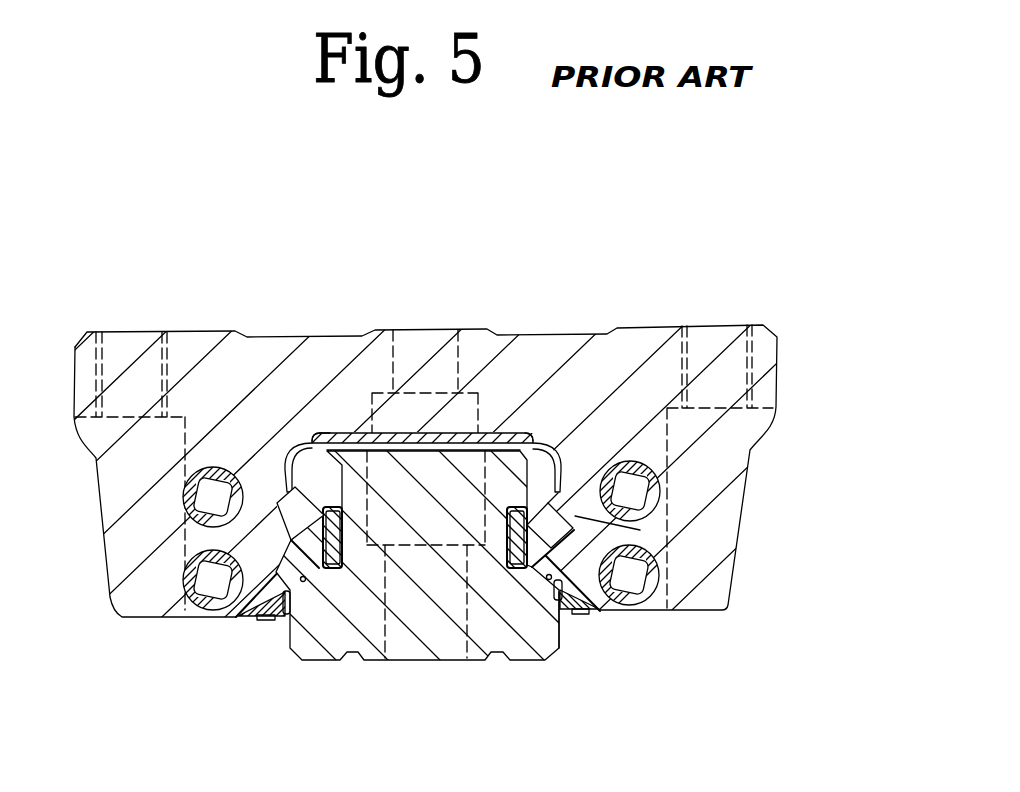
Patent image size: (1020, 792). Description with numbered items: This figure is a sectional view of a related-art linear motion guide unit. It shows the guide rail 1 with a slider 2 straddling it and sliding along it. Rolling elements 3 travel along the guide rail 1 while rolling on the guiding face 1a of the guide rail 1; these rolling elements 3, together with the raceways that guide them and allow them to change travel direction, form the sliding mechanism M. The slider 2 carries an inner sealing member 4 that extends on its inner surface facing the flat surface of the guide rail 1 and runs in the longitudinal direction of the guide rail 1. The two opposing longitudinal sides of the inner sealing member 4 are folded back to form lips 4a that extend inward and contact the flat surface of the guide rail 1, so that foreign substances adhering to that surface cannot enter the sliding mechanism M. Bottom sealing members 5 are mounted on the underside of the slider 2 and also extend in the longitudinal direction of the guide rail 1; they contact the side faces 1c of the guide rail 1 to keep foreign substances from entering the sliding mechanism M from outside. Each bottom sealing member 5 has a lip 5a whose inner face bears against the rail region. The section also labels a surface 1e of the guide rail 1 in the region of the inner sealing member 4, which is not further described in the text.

The guide rail 1 is at (358, 607).
The guiding face 1a is at (278, 495).
The side faces 1c is at (559, 630).
The upper face of track rail 1e is at (440, 449).
The slider 2 is at (663, 327).
The rolling elements 3 is at (305, 508).
The inner sealing member 4 is at (417, 433).
The lips 4a is at (328, 440).
The bottom sealing members 5 is at (258, 615).
The lip 5a is at (290, 613).
The sliding mechanism M is at (572, 514).